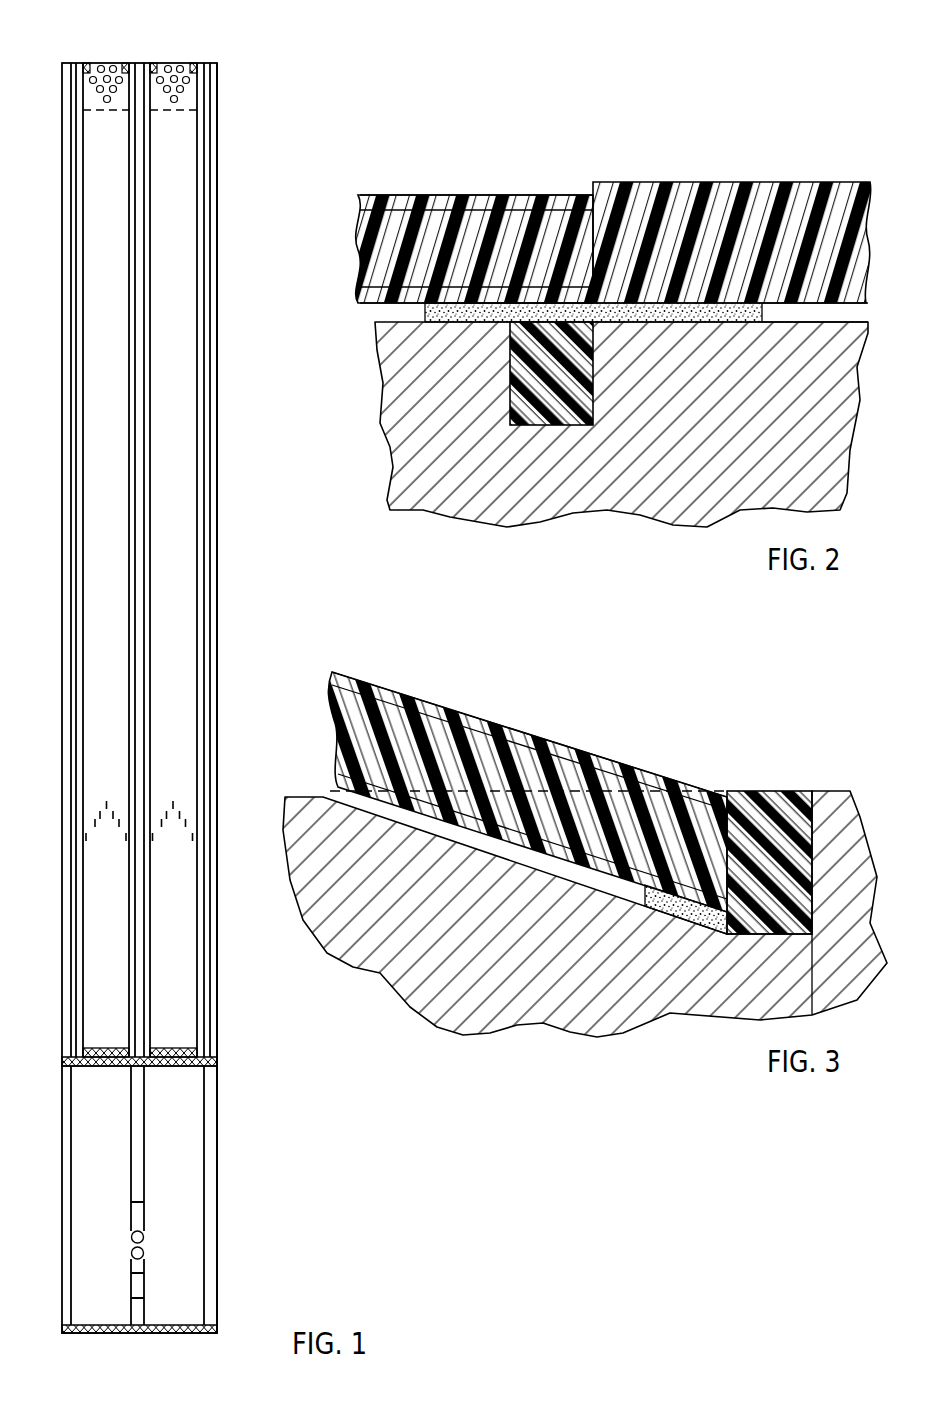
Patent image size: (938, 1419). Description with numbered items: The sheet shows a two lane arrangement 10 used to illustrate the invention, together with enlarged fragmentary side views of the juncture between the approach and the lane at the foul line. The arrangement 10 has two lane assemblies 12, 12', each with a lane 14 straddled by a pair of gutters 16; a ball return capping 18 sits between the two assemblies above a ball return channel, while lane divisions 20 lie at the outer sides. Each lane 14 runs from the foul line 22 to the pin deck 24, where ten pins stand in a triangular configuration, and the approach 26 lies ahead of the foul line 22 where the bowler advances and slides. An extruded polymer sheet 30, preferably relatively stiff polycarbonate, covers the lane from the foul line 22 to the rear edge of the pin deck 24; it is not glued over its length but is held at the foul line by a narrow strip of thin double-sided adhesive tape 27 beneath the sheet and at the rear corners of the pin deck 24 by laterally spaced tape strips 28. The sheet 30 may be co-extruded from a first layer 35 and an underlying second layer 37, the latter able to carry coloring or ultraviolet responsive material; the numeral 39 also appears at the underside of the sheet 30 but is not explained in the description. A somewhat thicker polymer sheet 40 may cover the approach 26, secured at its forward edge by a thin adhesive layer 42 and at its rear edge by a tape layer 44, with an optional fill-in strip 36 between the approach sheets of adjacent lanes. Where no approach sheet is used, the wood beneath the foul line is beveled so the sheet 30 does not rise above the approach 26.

In FIG. 1, the two lane arrangement 10 is at (240, 61).
In FIG. 1, the lane assembly 12 is at (246, 560).
In FIG. 1, the lane assembly 12' is at (61, 553).
In FIG. 1, the lane 14 is at (188, 585).
In FIG. 1, the gutters 16 is at (224, 320).
In FIG. 1, the ball return capping 18 is at (142, 252).
In FIG. 1, the lane divisions 20 is at (208, 666).
In FIG. 1, the foul line 22 is at (188, 1054).
In FIG. 2, the foul line 22 is at (515, 407).
In FIG. 3, the foul line 22 is at (777, 790).
In FIG. 1, the pin deck 24 is at (193, 102).
In FIG. 1, the approach 26 is at (192, 1228).
In FIG. 2, the approach 26 is at (483, 511).
In FIG. 3, the approach 26 is at (830, 794).
In FIG. 1, the double-sided adhesive tape 27 is at (172, 1046).
In FIG. 2, the double-sided adhesive tape 27 is at (420, 312).
In FIG. 3, the double-sided adhesive tape 27 is at (655, 908).
In FIG. 1, the double-sided adhesive tape strips 28 is at (178, 62).
In FIG. 2, the extruded polymer sheet 30 is at (358, 196).
In FIG. 3, the extruded polymer sheet 30 is at (332, 673).
In FIG. 2, the first layer 35 is at (415, 194).
In FIG. 3, the first layer 35 is at (460, 715).
In FIG. 1, the fill-in strip 36 is at (138, 1169).
In FIG. 2, the second layer 37 is at (495, 194).
In FIG. 3, the second layer 37 is at (530, 742).
In FIG. 2, the bottom layer 39 is at (366, 304).
In FIG. 3, the bottom layer 39 is at (330, 790).
In FIG. 2, the polymer sheet 40 is at (726, 191).
In FIG. 1, the thin layer of adhesive or double-sided adhesive tape 42 is at (187, 1068).
In FIG. 2, the thin layer of adhesive or double-sided adhesive tape 42 is at (762, 313).
In FIG. 1, the double-sided adhesive tape layer 44 is at (177, 1335).